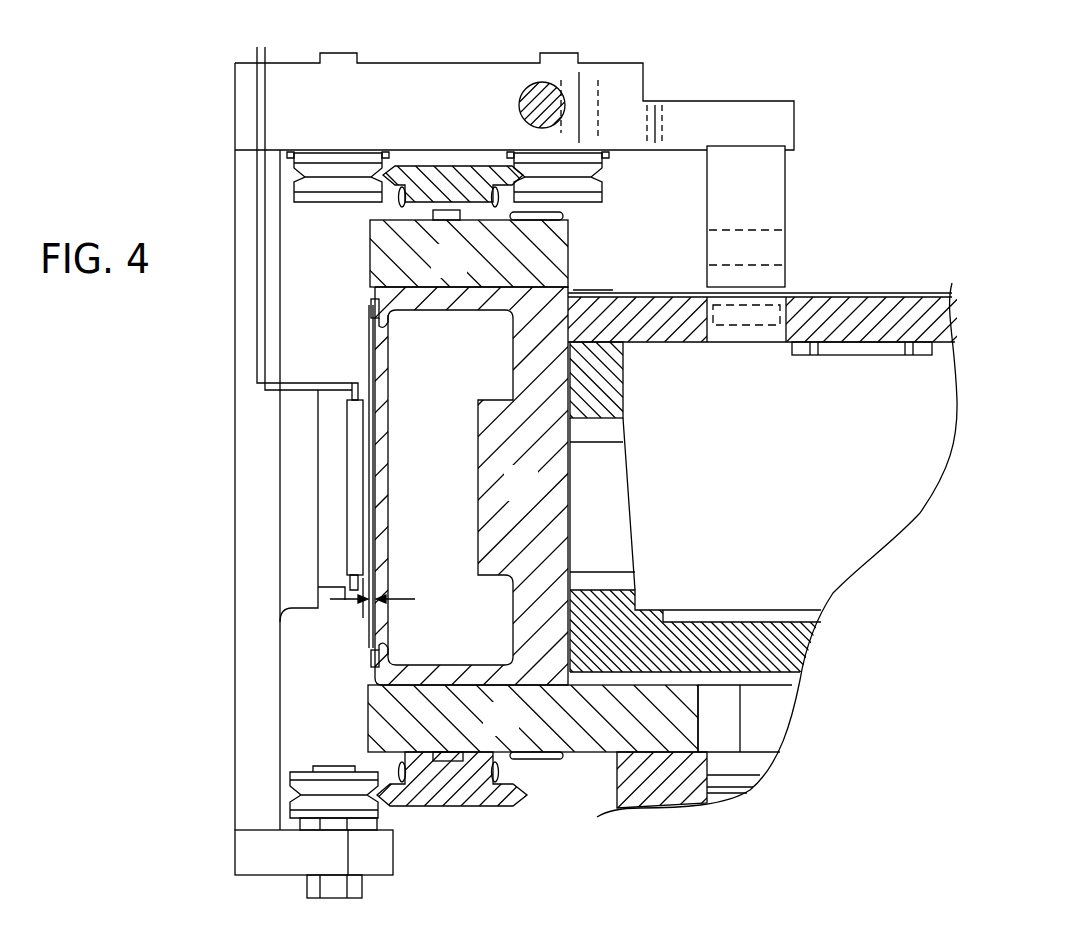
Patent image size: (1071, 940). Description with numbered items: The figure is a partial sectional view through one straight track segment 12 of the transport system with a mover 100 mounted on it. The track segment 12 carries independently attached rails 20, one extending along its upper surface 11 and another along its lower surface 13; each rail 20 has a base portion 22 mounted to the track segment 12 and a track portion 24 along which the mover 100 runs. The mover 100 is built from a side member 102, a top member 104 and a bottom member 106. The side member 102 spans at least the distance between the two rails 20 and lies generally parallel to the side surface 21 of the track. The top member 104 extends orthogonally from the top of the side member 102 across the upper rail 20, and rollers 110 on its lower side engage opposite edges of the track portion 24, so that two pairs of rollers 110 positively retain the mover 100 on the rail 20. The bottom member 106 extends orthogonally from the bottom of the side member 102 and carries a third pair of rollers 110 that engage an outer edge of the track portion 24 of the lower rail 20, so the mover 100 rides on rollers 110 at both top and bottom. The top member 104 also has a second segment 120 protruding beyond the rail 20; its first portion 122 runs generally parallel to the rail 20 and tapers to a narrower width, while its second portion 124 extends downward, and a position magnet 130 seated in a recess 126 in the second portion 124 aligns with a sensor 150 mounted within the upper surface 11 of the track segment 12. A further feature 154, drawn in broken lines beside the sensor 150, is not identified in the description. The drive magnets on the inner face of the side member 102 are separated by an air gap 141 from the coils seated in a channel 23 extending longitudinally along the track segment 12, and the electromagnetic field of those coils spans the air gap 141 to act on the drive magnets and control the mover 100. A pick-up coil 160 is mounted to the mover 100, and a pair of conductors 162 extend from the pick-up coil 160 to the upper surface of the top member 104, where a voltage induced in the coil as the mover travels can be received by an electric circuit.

The mover 100 is at (235, 107).
The side member 102 is at (252, 323).
The top member 104 is at (386, 82).
The bottom member 106 is at (375, 858).
The rollers 110 is at (338, 163).
The second segment 120 is at (756, 100).
The first portion 122 is at (686, 125).
The second portion 124 is at (758, 162).
The recess 126 is at (743, 230).
The position magnet 130 is at (772, 253).
The upper surface 11 is at (612, 293).
The track segment 12 is at (534, 497).
The lower surface 13 is at (770, 687).
The rail 20 is at (657, 727).
The side surface 21 is at (366, 313).
The base portion 22 is at (462, 275).
The channel 23 is at (512, 353).
The track portion 24 is at (425, 200).
The air gap 141 is at (397, 599).
The sensor 150 is at (755, 335).
The hole 154 is at (730, 332).
The pick-up coil 160 is at (356, 383).
The conductors 162 is at (258, 186).